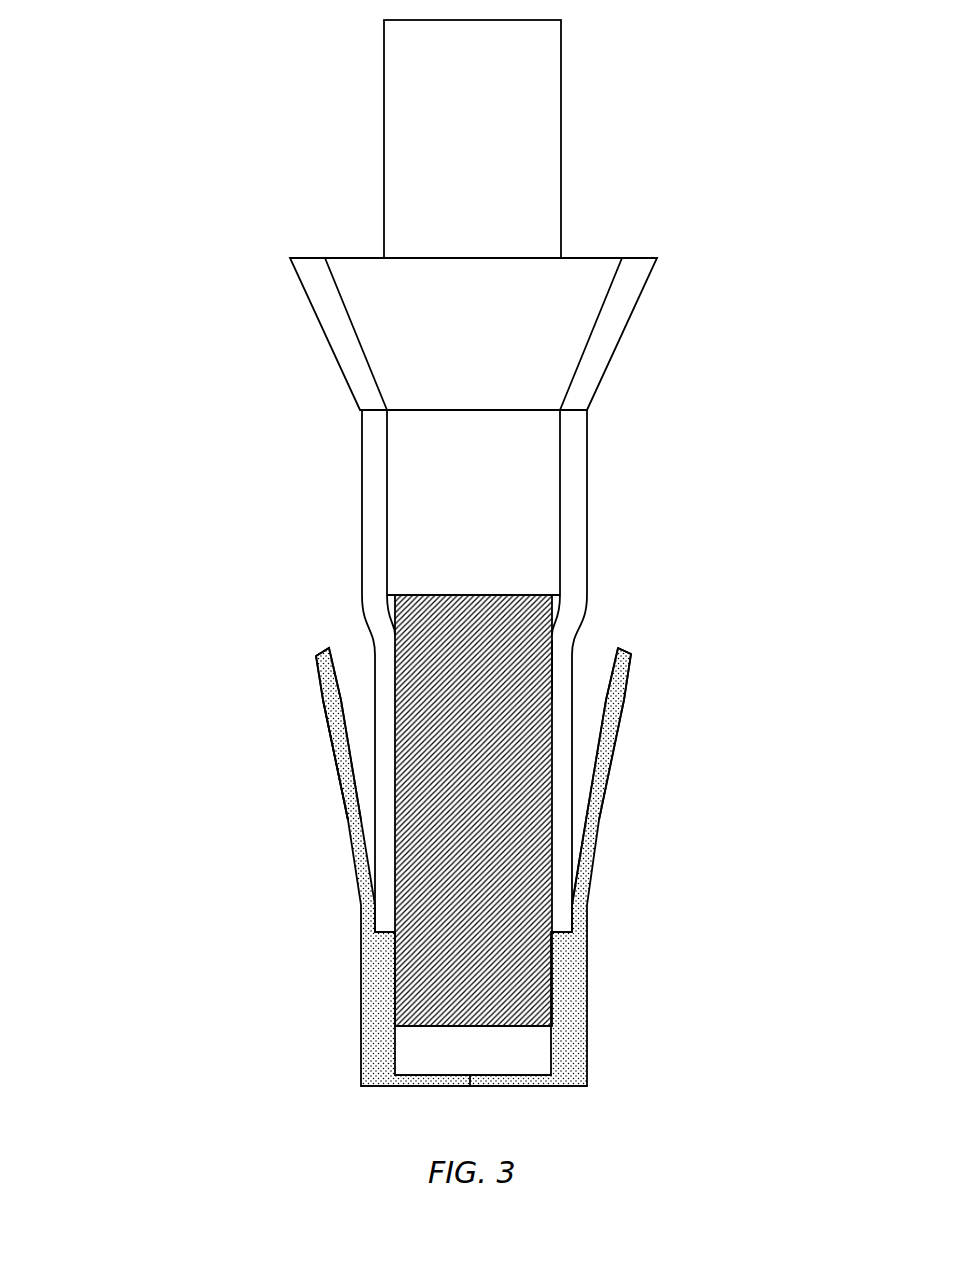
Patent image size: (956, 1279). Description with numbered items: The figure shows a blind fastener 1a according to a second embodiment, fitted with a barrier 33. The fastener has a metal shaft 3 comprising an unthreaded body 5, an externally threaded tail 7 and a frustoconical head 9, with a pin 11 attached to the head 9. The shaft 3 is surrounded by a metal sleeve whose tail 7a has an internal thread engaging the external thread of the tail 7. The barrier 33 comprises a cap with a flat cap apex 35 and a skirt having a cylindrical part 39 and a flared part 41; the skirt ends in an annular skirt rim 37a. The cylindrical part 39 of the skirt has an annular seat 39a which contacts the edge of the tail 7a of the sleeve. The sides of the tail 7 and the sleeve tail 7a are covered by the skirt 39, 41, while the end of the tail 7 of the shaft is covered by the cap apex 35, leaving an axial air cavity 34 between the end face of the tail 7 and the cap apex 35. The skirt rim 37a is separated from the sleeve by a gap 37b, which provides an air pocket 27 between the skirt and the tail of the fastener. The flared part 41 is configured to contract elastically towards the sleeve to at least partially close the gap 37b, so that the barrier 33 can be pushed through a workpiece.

The blind fastener 1a is at (220, 257).
The metal shaft 3 is at (348, 234).
The pin 11 is at (486, 152).
The frustoconical head 9 is at (540, 330).
The unthreaded body 5 is at (512, 444).
The air pocket 27 is at (366, 732).
The externally threaded tail 7 is at (500, 750).
The tail of the sleeve 7a is at (560, 670).
The cylindrical part of the skirt 39 is at (360, 982).
The annular skirt rim 37a is at (321, 650).
The gap 37b is at (593, 651).
The flared part of the skirt 41 is at (325, 700).
The annular seat 39a is at (584, 898).
The axial air cavity 34 is at (516, 1052).
The cap apex 35 is at (448, 1088).
The barrier 33 is at (270, 1090).